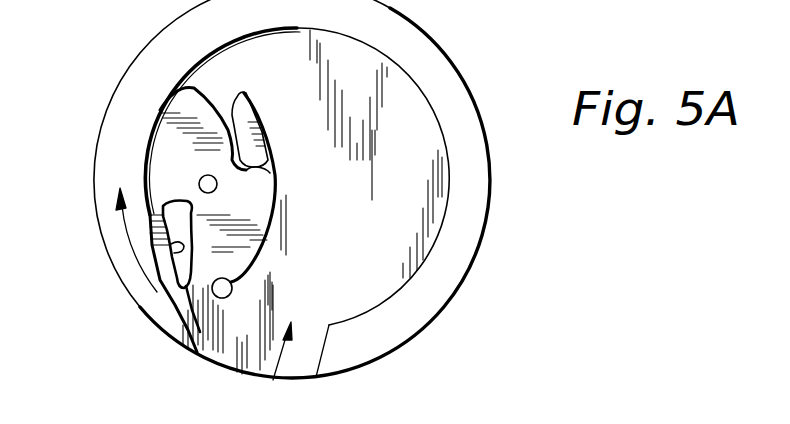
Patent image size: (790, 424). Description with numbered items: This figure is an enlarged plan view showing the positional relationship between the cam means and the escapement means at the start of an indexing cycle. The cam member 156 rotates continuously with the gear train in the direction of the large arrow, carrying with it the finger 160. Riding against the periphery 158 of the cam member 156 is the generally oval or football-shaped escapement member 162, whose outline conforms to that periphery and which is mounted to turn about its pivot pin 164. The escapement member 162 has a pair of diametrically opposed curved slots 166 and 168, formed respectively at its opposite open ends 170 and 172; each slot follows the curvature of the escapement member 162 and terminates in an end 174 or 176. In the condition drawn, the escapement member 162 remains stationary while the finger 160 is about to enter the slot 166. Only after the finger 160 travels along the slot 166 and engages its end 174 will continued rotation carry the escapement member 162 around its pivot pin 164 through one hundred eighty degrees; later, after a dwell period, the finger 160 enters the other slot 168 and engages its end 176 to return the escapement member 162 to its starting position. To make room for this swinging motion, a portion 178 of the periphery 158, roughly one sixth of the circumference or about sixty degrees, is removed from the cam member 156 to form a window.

The cam member 156 is at (427, 150).
The periphery 158 is at (437, 300).
The finger 160 is at (228, 300).
The escapement member 162 is at (250, 243).
The pivot pin 164 is at (215, 190).
The slot 166 is at (178, 248).
The slot 168 is at (238, 128).
The open end 170 is at (205, 282).
The open end 172 is at (218, 96).
The end of slot 174 is at (177, 203).
The end of slot 176 is at (274, 167).
The portion of periphery 178 is at (288, 373).